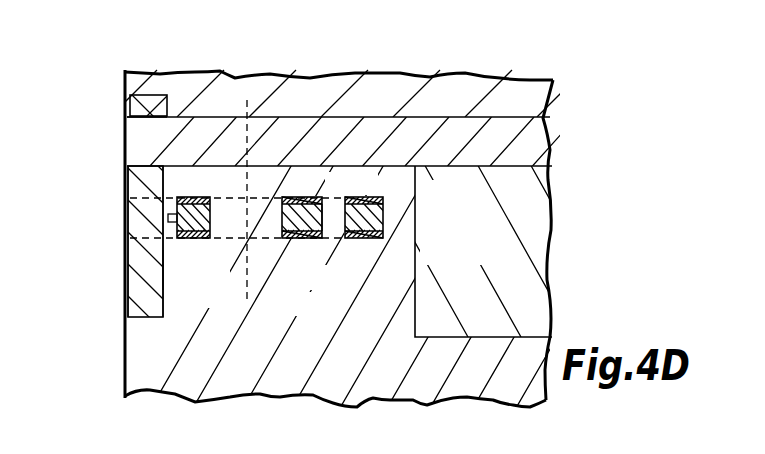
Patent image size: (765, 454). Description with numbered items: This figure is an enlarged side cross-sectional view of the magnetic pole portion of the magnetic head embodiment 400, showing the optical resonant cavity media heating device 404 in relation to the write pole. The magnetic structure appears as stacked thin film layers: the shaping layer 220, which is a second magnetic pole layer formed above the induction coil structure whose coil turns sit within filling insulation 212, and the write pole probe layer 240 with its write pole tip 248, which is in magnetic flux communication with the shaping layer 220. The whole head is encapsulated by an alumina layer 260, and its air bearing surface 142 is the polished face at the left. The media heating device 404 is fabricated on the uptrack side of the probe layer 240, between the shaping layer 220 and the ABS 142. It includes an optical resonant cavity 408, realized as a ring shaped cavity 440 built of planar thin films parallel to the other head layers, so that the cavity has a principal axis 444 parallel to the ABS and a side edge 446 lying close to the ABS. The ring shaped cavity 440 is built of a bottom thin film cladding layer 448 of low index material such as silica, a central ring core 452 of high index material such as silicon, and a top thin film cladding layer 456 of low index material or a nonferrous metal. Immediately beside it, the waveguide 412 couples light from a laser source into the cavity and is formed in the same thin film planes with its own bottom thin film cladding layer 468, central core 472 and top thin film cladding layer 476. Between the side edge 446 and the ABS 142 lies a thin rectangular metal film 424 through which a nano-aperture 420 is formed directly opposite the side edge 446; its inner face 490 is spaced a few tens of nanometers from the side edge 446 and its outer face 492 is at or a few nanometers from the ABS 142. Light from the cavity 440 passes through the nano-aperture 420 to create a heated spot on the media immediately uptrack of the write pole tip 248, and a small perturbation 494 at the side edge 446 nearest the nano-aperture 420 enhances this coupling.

The magnetic head embodiment 400 is at (118, 93).
The optical resonant cavity media heating device 404 is at (165, 325).
The optical resonant cavity 408 is at (334, 136).
The waveguide 412 is at (378, 197).
The nano-aperture 420 is at (125, 214).
The metal film 424 is at (134, 257).
The ring shaped cavity 440 is at (283, 197).
The principal axis 444 is at (247, 102).
The side edge 446 is at (172, 223).
The bottom thin film cladding layer 448 is at (290, 241).
The central ring core 452 is at (322, 218).
The top thin film cladding layer 456 is at (311, 201).
The bottom thin film cladding layer 468 is at (383, 237).
The central core 472 is at (373, 216).
The top thin film cladding layer 476 is at (383, 199).
The inner face 490 is at (165, 268).
The outer face 492 is at (123, 223).
The perturbation 494 is at (183, 180).
The air bearing surface 142 is at (124, 110).
The write pole tip 248 is at (147, 140).
The alumina layer 260 is at (530, 100).
The write pole probe layer 240 is at (530, 148).
The shaping layer 220 is at (533, 233).
The filling insulation 212 is at (507, 383).